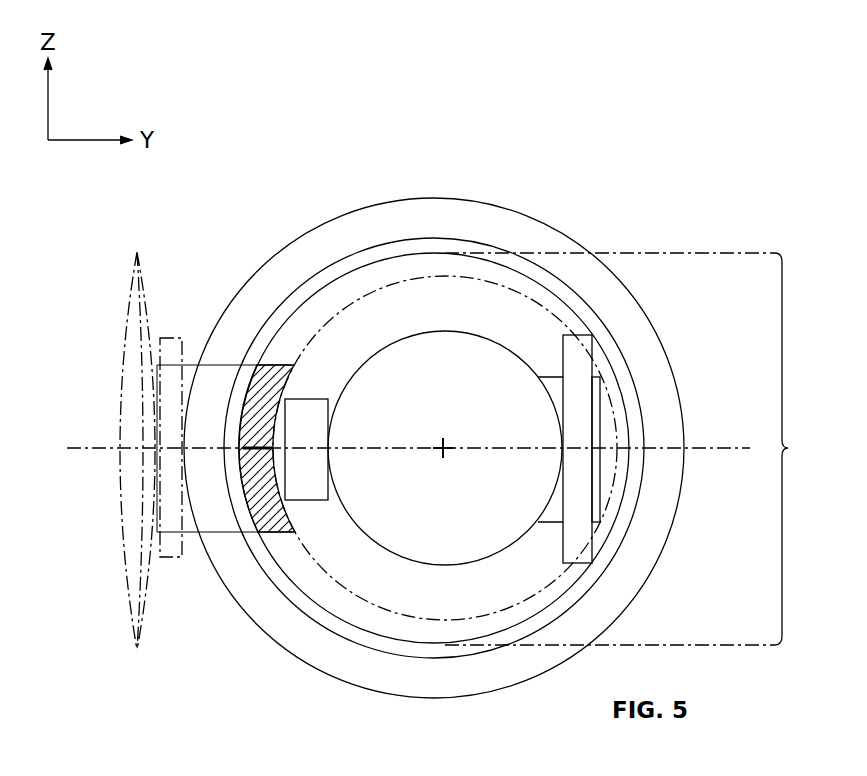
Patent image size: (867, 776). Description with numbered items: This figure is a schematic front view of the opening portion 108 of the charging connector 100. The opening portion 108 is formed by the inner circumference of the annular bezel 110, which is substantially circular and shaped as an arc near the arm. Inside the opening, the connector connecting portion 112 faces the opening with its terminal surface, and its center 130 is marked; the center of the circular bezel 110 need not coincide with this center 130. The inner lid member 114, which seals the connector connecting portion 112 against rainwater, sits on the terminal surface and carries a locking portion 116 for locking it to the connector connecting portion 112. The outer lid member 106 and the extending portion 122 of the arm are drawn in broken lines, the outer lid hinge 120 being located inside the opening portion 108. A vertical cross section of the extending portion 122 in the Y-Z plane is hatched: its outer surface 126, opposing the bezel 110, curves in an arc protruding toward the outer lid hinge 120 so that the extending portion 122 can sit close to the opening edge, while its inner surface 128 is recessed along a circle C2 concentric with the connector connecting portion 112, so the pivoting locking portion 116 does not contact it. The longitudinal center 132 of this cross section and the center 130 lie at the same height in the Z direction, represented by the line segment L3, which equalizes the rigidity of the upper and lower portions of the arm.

The charging connector 100 is at (260, 183).
The outer lid member 106 is at (120, 358).
The opening portion 108 is at (643, 449).
The bezel 110 is at (468, 199).
The connector connecting portion 112 is at (409, 337).
The inner lid member 114 is at (580, 336).
The locking portion 116 is at (310, 399).
The outer lid hinge 120 is at (172, 338).
The extending portion 122 is at (215, 534).
The outer surface 126 is at (244, 406).
The inner surface 128 is at (287, 514).
The center of the connector connecting portion 130 is at (446, 443).
The center in the longitudinal direction of the extending portion 132 is at (257, 534).
The line segment L3 is at (742, 446).
The circle C2 is at (413, 620).